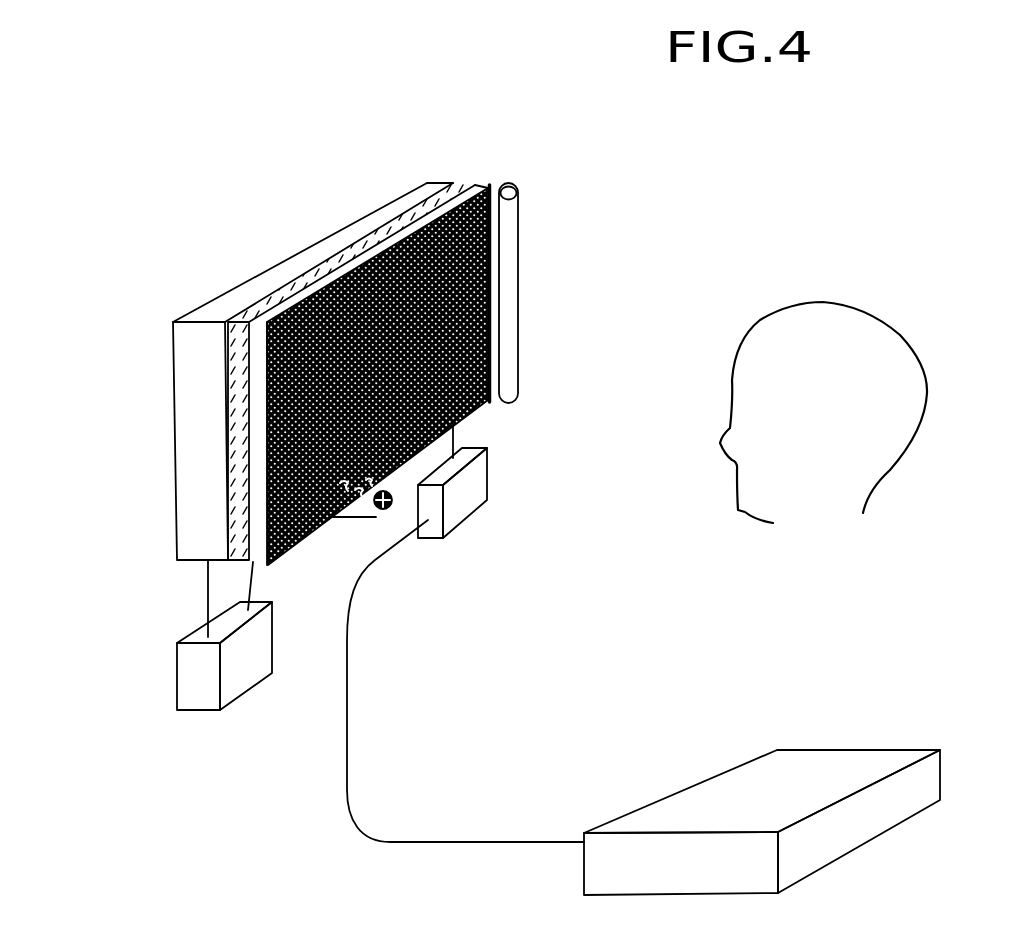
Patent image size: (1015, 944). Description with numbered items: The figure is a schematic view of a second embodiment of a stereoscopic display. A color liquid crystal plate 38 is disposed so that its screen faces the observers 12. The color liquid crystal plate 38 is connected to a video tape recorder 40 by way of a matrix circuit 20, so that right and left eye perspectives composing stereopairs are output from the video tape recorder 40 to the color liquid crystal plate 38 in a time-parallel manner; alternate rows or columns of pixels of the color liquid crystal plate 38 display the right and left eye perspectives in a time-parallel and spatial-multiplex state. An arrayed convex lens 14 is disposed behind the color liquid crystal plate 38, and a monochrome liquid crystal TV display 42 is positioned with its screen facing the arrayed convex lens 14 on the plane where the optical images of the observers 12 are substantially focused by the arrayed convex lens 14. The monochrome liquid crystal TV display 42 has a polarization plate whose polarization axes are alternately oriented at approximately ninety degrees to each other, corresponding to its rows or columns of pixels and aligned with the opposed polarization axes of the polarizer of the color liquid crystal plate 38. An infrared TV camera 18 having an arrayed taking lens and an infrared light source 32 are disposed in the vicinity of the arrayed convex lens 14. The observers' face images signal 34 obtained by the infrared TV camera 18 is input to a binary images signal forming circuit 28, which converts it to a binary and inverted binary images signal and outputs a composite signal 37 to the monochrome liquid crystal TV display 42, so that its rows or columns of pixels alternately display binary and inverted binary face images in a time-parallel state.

The observers 12 is at (910, 500).
The arrayed convex lens 14 is at (238, 318).
The infrared TV camera 18 is at (400, 498).
The matrix circuit 20 is at (500, 480).
The binary images signal forming circuit 28 is at (200, 715).
The infrared light source 32 is at (524, 243).
The observers' face images signal 34 is at (242, 582).
The composite signal 37 is at (203, 595).
The color liquid crystal plate 38 is at (491, 182).
The video tape recorder 40 is at (742, 785).
The monochrome liquid crystal TV display 42 is at (172, 398).